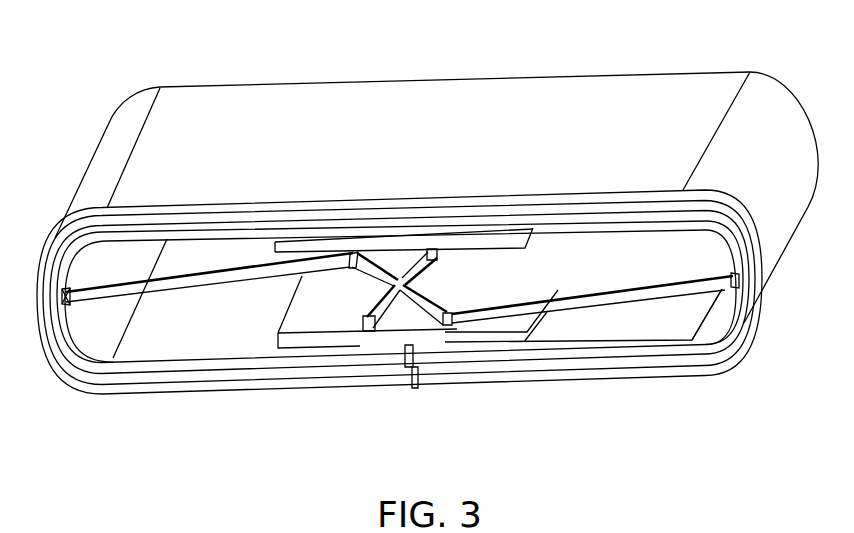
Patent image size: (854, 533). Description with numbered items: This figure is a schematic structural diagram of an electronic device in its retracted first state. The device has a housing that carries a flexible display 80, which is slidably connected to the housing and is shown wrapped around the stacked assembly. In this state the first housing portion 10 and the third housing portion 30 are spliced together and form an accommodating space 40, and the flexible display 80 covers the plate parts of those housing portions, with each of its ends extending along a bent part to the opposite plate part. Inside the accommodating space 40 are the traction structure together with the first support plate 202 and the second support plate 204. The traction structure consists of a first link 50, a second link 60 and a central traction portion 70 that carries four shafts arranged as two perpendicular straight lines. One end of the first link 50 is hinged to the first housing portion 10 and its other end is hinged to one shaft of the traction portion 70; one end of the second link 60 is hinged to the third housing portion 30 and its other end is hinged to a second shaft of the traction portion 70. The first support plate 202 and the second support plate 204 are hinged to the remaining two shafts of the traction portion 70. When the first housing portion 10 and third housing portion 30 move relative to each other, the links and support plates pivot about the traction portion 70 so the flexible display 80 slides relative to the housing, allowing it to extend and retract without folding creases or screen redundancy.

The first housing portion 10 is at (153, 345).
The third housing portion 30 is at (608, 327).
The accommodating space 40 is at (671, 232).
The first link 50 is at (185, 272).
The second link 60 is at (602, 302).
The traction portion 70 is at (397, 285).
The flexible display 80 is at (323, 130).
The first support plate 202 is at (453, 248).
The second support plate 204 is at (293, 330).